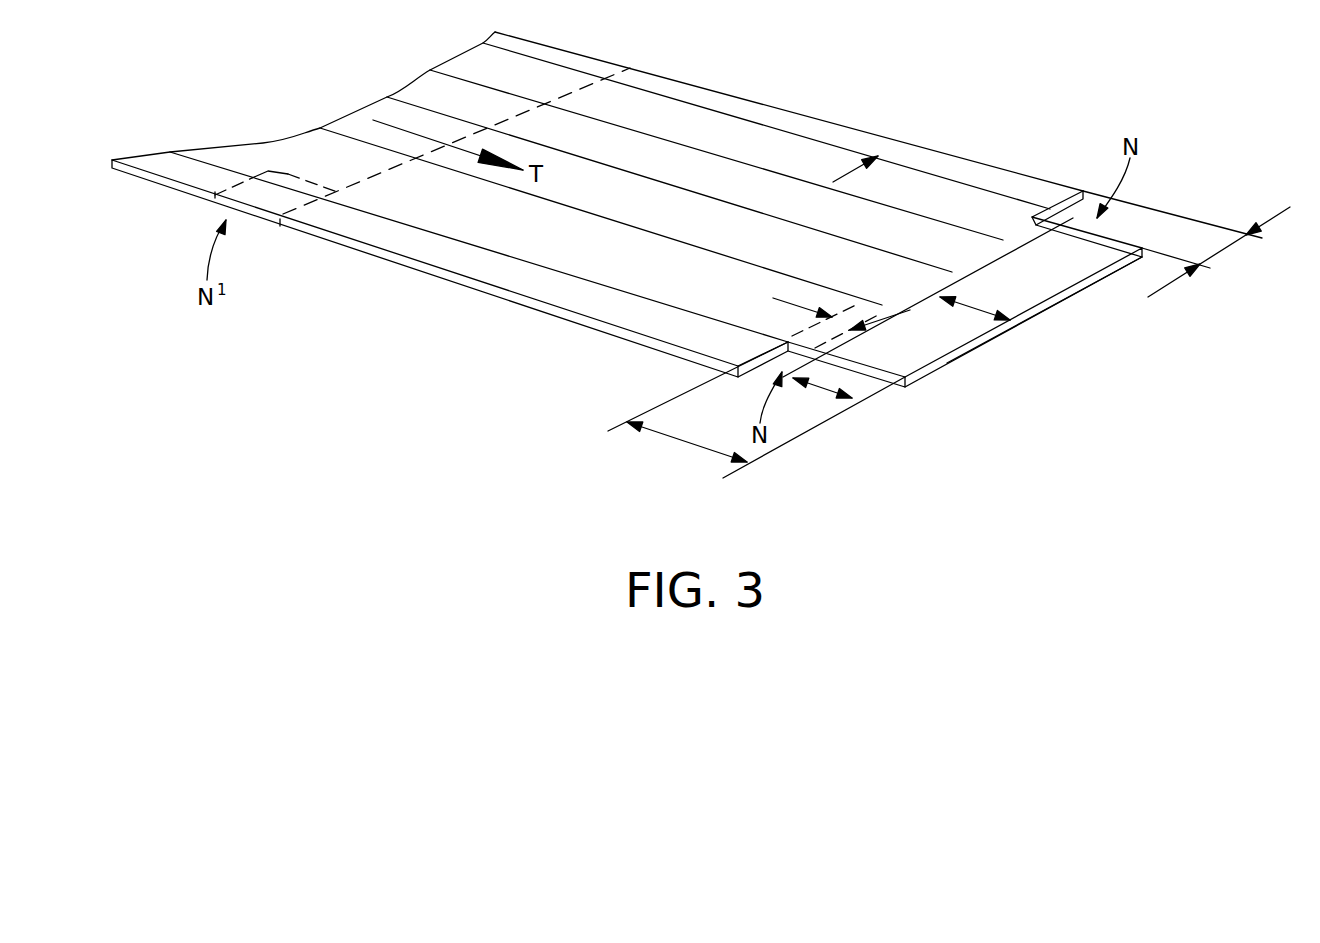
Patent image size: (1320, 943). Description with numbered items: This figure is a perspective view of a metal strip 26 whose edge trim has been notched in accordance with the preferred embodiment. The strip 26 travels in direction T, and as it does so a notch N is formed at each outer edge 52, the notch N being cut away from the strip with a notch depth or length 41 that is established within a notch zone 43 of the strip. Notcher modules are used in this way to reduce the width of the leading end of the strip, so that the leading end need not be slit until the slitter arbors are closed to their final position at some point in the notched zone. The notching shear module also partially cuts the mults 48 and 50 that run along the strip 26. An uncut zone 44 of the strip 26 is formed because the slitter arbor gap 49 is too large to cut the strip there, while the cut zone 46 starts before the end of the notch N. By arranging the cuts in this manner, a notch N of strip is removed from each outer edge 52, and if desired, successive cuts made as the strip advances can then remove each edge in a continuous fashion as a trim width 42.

The strip 26 is at (387, 340).
The notch depth or length 41 is at (1186, 244).
The trim width 42 is at (913, 141).
The notch zone 43 is at (682, 443).
The uncut zone 44 is at (1010, 320).
The cut zone 46 is at (947, 363).
The mult 48 is at (690, 120).
The slitter arbor gap 49 is at (857, 400).
The mult 50 is at (542, 252).
The outer edge 52 is at (805, 127).